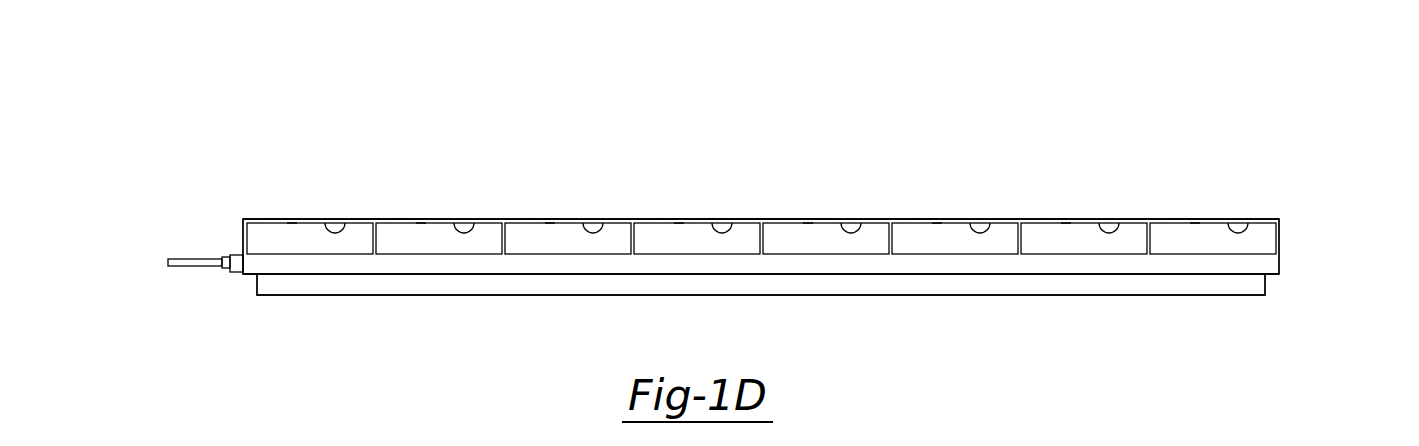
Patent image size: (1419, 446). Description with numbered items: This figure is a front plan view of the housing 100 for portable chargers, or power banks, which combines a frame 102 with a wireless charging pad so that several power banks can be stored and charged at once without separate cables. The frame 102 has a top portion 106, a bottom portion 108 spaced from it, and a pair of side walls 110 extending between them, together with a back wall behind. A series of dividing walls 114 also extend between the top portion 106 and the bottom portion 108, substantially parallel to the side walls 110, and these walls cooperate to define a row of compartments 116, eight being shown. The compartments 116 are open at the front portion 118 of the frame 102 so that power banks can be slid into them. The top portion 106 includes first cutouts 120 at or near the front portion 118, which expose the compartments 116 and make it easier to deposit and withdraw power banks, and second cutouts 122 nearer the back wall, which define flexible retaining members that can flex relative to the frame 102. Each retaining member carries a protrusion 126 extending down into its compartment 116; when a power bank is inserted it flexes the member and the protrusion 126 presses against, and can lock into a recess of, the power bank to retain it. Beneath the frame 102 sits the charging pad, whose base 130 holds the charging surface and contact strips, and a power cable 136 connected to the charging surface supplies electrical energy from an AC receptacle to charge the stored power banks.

The housing 100 is at (1220, 86).
The frame 102 is at (283, 340).
The top portion 106 is at (1270, 219).
The bottom portion 108 is at (1258, 263).
The side walls 110 is at (243, 225).
The dividing walls 114 is at (371, 242).
The compartments 116 is at (288, 219).
The front portion 118 is at (767, 114).
The first cutouts 120 is at (292, 229).
The second cutouts 122 is at (270, 216).
The protrusion 126 is at (343, 219).
The base 130 is at (1222, 297).
The power cable 136 is at (178, 261).